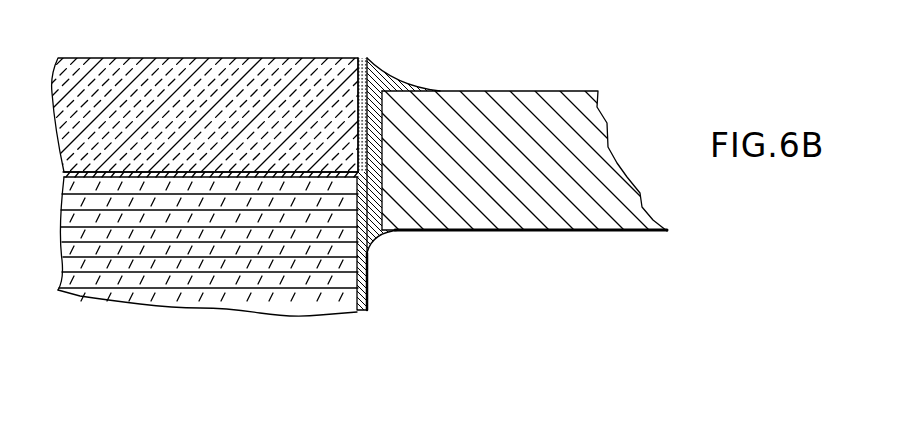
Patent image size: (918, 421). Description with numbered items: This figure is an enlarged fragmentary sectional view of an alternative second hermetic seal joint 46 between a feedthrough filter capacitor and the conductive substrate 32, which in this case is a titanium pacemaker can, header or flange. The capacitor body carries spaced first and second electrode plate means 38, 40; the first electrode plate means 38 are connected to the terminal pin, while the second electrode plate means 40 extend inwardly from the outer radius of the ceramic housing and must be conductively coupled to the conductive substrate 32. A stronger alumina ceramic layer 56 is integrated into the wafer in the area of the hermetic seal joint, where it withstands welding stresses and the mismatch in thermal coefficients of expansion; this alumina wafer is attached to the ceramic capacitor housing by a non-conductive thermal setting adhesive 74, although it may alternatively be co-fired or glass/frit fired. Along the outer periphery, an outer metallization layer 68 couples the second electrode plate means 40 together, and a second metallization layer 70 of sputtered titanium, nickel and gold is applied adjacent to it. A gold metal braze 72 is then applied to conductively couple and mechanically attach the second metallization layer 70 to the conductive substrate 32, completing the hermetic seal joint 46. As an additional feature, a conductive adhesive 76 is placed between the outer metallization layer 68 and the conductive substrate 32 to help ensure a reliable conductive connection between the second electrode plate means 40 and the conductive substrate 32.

The conductive substrate 32 is at (553, 90).
The first electrode plate means 38 is at (318, 297).
The second electrode plate means 40 is at (79, 243).
The second hermetic seal joint 46 is at (409, 76).
The alumina ceramic layer 56 is at (112, 62).
The outer metallization layer 68 is at (368, 287).
The second metallization layer 70 is at (362, 57).
The metal braze 72 is at (373, 58).
The non-conductive thermal setting adhesive 74 is at (97, 178).
The conductive adhesive 76 is at (387, 247).